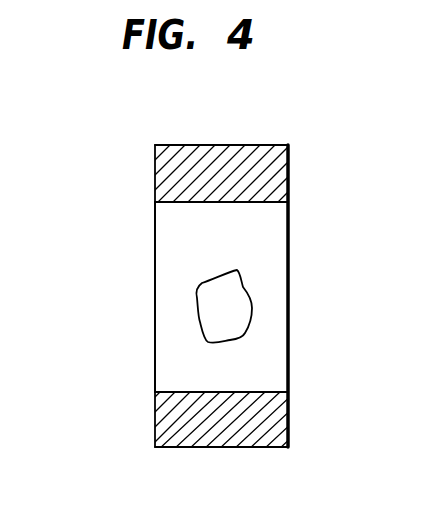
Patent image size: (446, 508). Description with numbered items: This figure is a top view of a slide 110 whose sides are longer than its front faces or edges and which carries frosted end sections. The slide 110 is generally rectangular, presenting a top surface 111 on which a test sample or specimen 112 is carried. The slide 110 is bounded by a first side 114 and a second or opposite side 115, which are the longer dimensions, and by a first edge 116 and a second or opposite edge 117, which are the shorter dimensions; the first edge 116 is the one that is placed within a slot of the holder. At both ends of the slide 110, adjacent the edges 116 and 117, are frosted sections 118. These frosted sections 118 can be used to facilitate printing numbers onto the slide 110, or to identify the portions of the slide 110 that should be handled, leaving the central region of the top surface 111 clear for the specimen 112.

The slide 110 is at (333, 263).
The top surface 111 is at (250, 370).
The test sample or specimen 112 is at (232, 297).
The first side 114 is at (155, 358).
The second side 115 is at (270, 423).
The first edge 116 is at (222, 145).
The second edge 117 is at (245, 448).
The frosted sections 118 is at (272, 173).